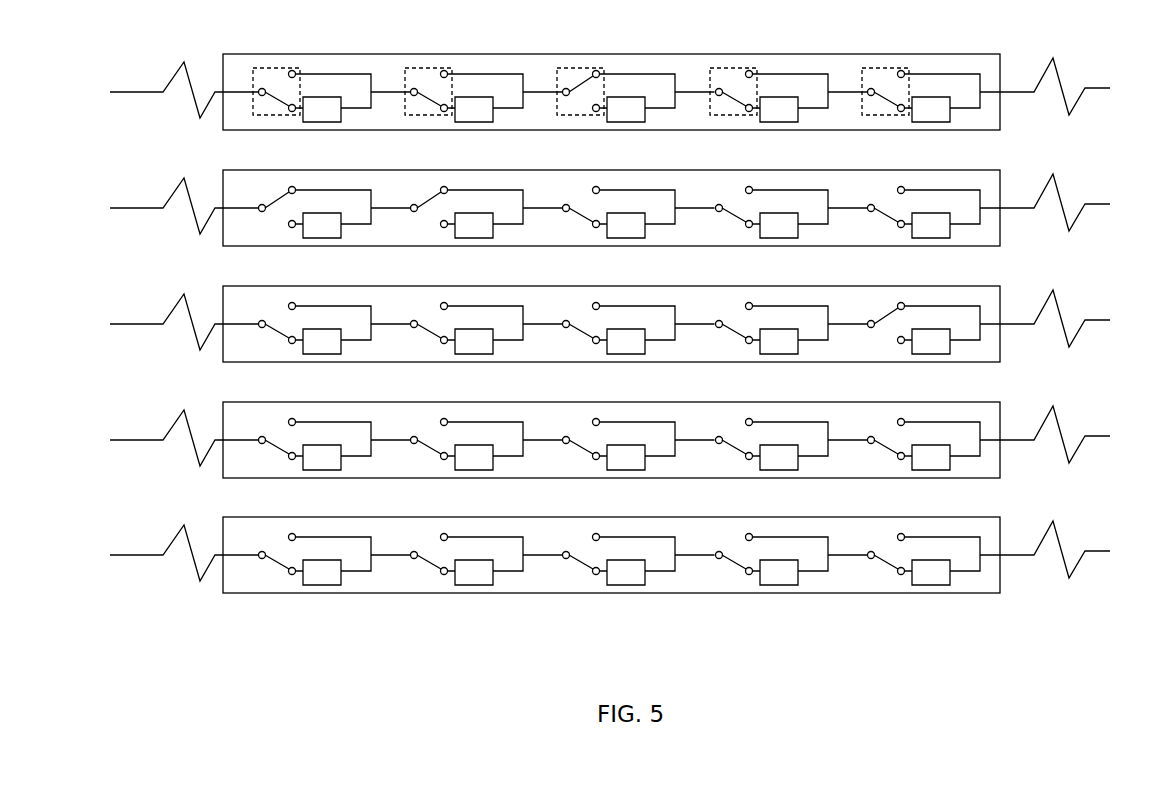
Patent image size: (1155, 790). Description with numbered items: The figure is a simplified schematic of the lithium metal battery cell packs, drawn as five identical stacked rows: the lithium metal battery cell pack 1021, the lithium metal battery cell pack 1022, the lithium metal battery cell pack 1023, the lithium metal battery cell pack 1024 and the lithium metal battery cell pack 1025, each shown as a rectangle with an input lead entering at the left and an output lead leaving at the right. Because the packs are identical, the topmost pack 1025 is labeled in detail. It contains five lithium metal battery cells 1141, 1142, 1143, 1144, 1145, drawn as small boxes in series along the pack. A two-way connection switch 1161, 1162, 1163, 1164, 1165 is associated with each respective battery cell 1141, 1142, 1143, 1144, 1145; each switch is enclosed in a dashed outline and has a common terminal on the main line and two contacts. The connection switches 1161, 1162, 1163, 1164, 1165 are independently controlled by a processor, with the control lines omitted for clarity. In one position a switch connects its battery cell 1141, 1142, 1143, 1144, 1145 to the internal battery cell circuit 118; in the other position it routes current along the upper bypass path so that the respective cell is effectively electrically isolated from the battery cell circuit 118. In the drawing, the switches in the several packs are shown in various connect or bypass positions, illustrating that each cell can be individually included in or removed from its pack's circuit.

The lithium metal battery cell pack 1021 is at (992, 517).
The lithium metal battery cell pack 1022 is at (990, 402).
The lithium metal battery cell pack 1023 is at (986, 286).
The lithium metal battery cell pack 1024 is at (987, 170).
The lithium metal battery cell pack 1025 is at (643, 92).
The lithium metal battery cell 1141 is at (318, 123).
The lithium metal battery cell 1142 is at (467, 123).
The lithium metal battery cell 1143 is at (628, 123).
The lithium metal battery cell 1144 is at (783, 123).
The lithium metal battery cell 1145 is at (936, 123).
The two-way connection switch 1161 is at (265, 68).
The two-way connection switch 1162 is at (417, 68).
The two-way connection switch 1163 is at (571, 68).
The two-way connection switch 1164 is at (723, 68).
The two-way connection switch 1165 is at (873, 68).
The internal battery cell circuit 118 is at (348, 73).